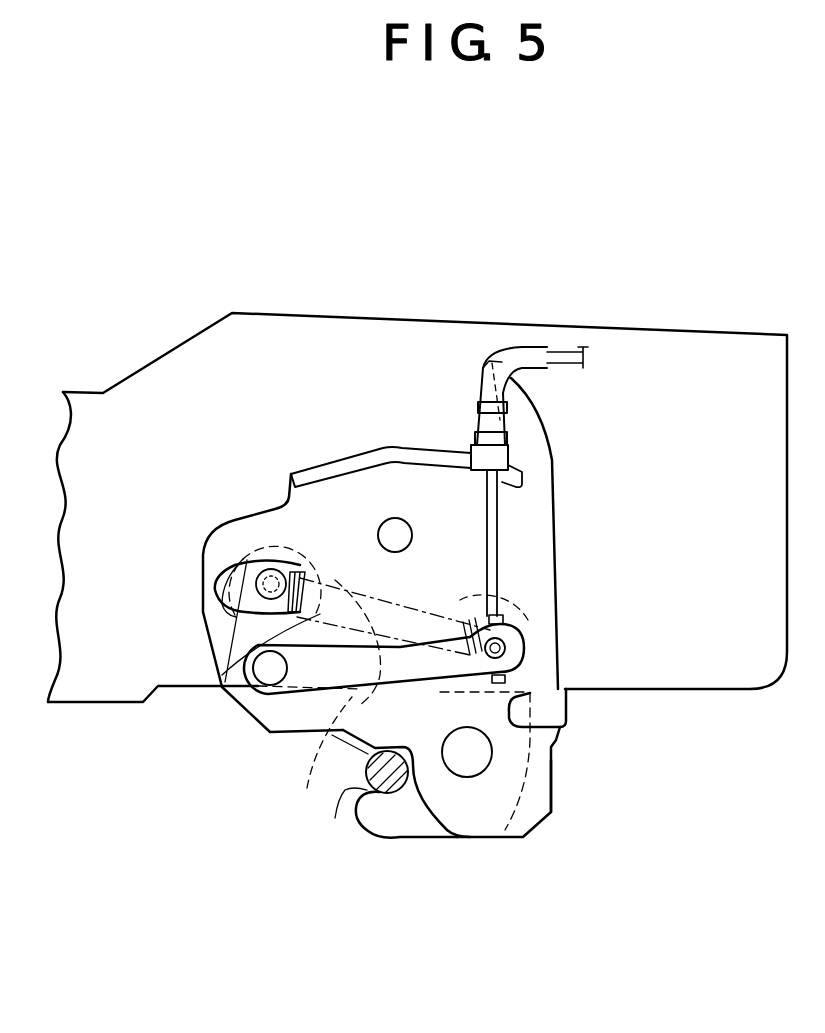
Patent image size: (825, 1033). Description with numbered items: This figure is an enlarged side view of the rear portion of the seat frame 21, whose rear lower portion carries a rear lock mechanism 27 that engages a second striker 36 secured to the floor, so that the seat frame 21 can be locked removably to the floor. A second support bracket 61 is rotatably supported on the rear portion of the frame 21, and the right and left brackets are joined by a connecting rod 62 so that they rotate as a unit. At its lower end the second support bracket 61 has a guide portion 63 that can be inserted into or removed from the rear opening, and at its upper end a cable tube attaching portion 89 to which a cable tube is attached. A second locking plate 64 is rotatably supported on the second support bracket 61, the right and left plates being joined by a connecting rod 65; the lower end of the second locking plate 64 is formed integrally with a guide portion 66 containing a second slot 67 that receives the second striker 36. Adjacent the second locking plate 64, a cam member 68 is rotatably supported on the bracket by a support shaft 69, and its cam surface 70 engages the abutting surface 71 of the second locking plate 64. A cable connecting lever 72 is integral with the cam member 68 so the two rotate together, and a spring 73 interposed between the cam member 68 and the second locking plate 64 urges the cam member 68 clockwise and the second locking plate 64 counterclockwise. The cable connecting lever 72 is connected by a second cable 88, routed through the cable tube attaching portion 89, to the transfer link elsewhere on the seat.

The seat frame 21 is at (183, 357).
The rear lock mechanism 27 is at (488, 316).
The second striker 36 is at (388, 793).
The second support bracket 61 is at (328, 485).
The connecting rod 62 is at (395, 535).
The guide portion 63 is at (525, 815).
The second locking plate 64 is at (556, 745).
The connecting rod 65 is at (487, 757).
The guide portion 66 is at (447, 838).
The second slot 67 is at (335, 818).
The cam member 68 is at (232, 620).
The support shaft 69 is at (243, 690).
The cam surface 70 is at (307, 788).
The abutting surface 71 is at (290, 695).
The cable connecting lever 72 is at (525, 647).
The spring 73 is at (258, 673).
The second cable 88 is at (573, 352).
The cable tube attaching portion 89 is at (523, 460).